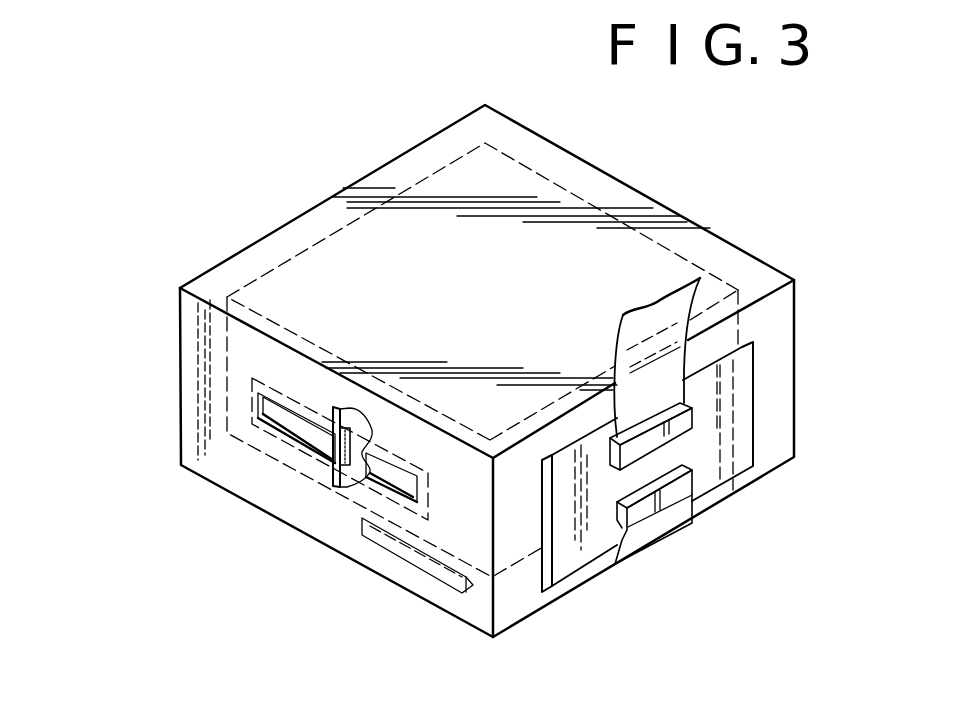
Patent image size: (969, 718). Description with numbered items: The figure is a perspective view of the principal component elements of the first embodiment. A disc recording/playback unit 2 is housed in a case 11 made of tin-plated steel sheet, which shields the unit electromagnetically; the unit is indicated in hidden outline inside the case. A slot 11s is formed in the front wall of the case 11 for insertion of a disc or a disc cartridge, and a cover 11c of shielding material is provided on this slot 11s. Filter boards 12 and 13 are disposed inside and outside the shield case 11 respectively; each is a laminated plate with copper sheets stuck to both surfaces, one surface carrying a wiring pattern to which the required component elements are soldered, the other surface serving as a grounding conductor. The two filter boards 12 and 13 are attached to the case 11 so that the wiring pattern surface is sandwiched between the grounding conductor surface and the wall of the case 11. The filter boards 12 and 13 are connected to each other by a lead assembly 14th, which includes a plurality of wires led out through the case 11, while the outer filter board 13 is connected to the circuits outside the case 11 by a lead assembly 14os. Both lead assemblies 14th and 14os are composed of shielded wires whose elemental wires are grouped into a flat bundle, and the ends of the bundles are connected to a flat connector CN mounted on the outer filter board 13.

The disc recording/playback unit 2 is at (437, 170).
The case 11 is at (233, 254).
The slot 11s is at (293, 428).
The cover 11c is at (360, 462).
The filter board 12 is at (447, 609).
The filter board 13 is at (552, 583).
The flat connector CN is at (683, 428).
The lead assembly 14th is at (662, 525).
The lead assembly 14os is at (690, 281).